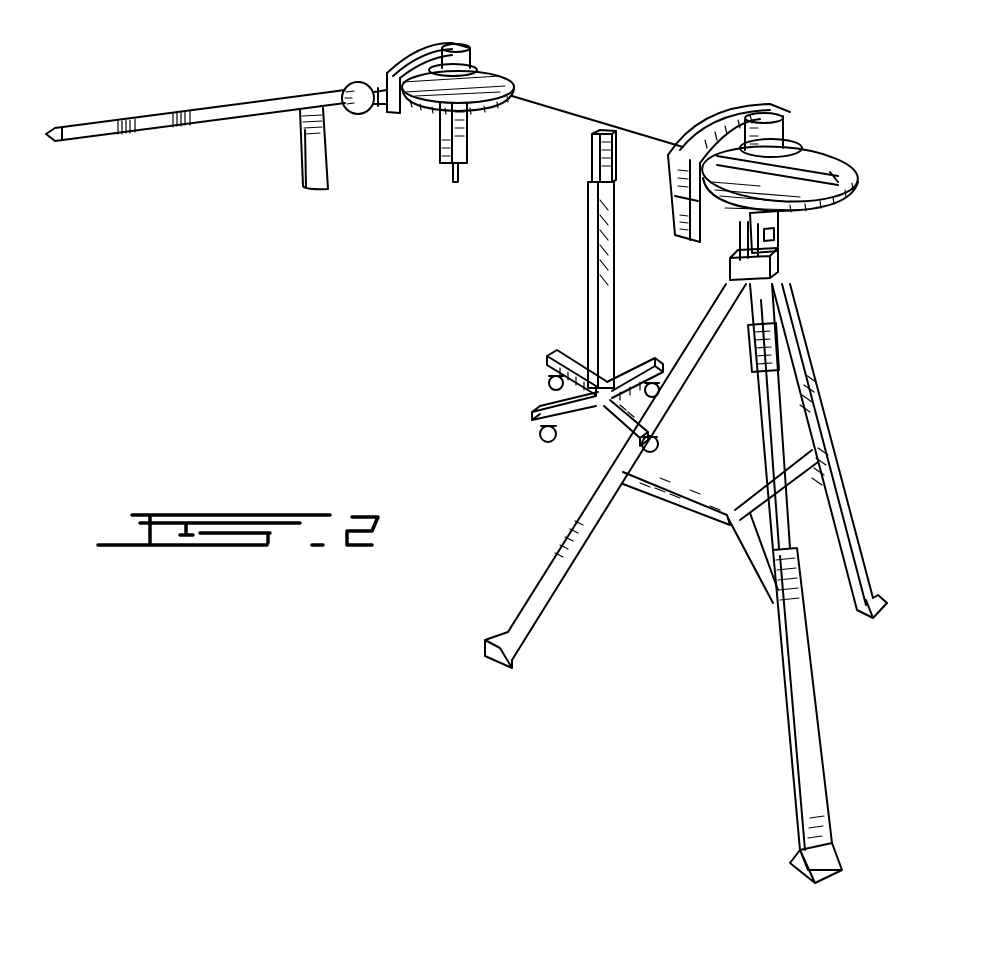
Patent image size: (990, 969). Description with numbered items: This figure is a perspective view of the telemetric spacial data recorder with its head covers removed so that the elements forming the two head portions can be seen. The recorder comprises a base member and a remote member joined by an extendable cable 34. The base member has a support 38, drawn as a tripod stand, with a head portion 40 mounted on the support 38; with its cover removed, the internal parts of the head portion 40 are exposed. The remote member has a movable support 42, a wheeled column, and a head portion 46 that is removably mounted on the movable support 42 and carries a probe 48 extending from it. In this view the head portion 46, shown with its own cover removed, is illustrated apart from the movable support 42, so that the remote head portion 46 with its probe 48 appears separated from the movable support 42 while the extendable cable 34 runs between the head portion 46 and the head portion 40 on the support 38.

The extendable cable 34 is at (593, 124).
The support 38 is at (830, 463).
The head portion 40 is at (882, 107).
The movable support 42 is at (590, 266).
The head portion 46 is at (523, 67).
The probe 48 is at (250, 98).